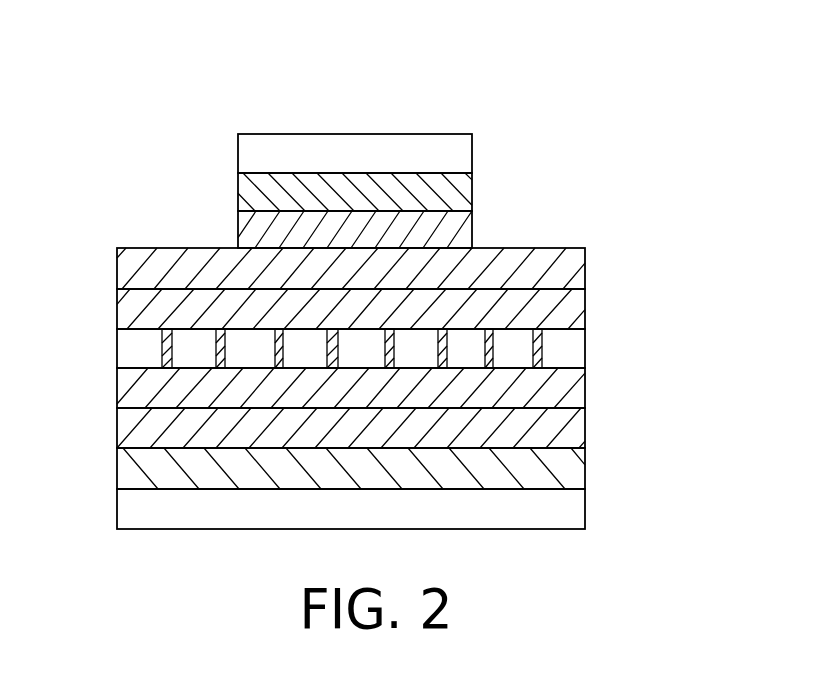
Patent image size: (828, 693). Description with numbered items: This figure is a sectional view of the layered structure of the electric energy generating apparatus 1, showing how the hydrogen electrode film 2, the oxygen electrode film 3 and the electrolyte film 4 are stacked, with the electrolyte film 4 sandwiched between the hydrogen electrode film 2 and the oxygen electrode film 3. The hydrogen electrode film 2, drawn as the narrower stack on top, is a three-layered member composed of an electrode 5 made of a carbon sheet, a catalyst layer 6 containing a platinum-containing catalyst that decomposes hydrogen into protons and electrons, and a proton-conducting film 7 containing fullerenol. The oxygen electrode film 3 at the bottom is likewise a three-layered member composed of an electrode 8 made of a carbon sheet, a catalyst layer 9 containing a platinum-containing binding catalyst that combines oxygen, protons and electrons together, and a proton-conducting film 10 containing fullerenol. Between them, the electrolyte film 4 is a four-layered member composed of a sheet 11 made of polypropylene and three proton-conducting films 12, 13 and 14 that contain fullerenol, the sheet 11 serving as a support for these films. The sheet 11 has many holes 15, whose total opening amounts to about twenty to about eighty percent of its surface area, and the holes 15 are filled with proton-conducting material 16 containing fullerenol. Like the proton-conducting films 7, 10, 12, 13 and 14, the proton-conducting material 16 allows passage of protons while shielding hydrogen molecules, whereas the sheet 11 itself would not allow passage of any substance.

The electric energy generating apparatus 1 is at (632, 146).
The hydrogen electrode film 2 is at (216, 152).
The oxygen electrode film 3 is at (96, 410).
The electrolyte film 4 is at (96, 250).
The electrode 5 is at (472, 151).
The catalyst layer 6 is at (472, 196).
The proton-conducting film 7 is at (472, 233).
The electrode 8 is at (585, 520).
The catalyst layer 9 is at (585, 478).
The proton-conducting film 10 is at (585, 432).
The sheet 11 is at (585, 347).
The proton-conducting film 12 is at (585, 388).
The proton-conducting film 13 is at (585, 310).
The proton-conducting film 14 is at (585, 268).
The holes 15 is at (173, 350).
The proton-conducting material 16 is at (325, 350).